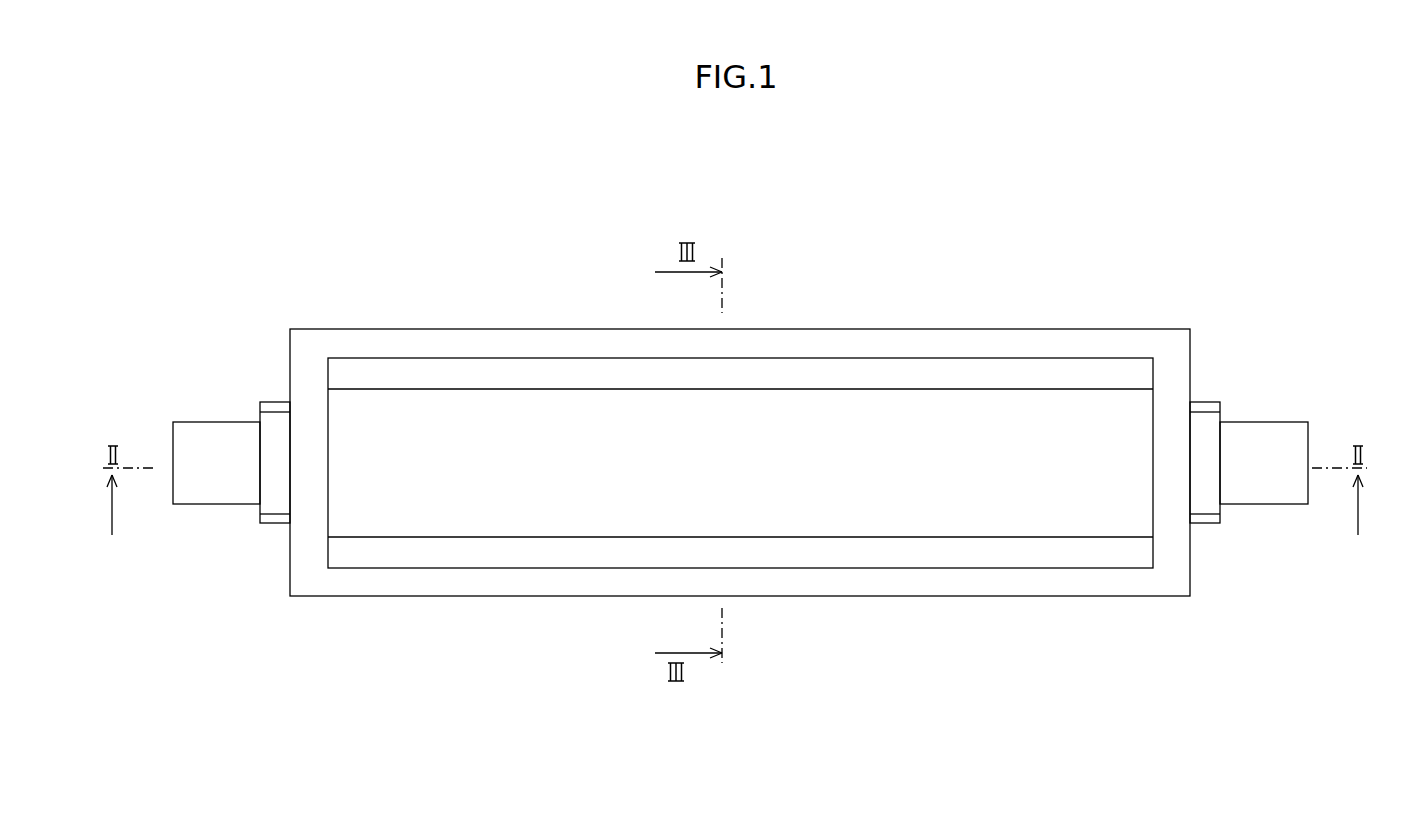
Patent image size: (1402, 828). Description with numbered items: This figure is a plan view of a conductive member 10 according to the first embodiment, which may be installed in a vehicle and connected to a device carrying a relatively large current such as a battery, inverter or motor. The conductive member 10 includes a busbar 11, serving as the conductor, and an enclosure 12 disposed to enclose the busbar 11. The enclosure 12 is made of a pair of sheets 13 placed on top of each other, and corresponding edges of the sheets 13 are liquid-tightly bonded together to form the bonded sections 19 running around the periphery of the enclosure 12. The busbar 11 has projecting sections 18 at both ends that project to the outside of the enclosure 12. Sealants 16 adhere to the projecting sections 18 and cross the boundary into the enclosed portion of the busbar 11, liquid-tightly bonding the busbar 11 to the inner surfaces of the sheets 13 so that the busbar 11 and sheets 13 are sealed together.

The conductive member 10 is at (1116, 295).
The busbar 11 is at (751, 405).
The enclosure 12 is at (822, 408).
The sheet 13 is at (940, 418).
The sealant 16 is at (277, 428).
The projecting section 18 is at (214, 435).
The bonded section 19 is at (1043, 343).